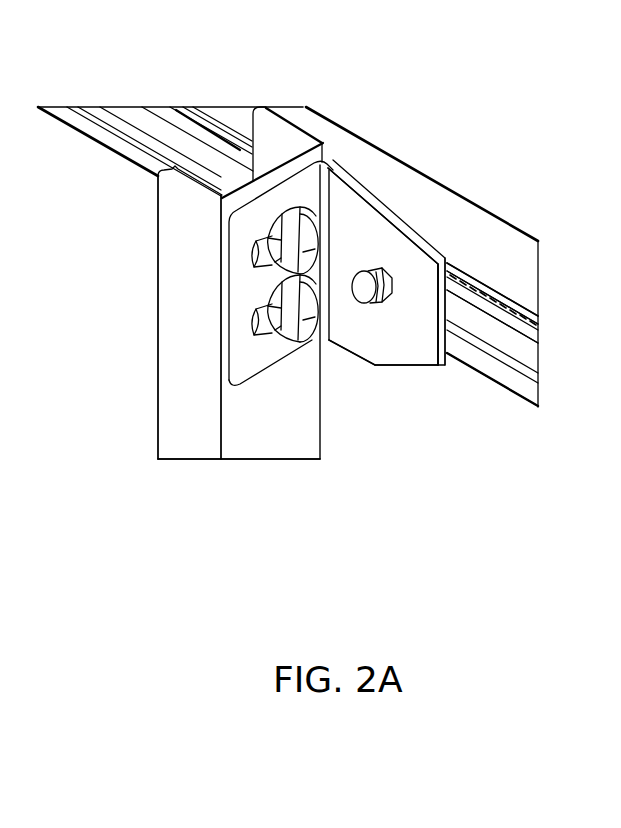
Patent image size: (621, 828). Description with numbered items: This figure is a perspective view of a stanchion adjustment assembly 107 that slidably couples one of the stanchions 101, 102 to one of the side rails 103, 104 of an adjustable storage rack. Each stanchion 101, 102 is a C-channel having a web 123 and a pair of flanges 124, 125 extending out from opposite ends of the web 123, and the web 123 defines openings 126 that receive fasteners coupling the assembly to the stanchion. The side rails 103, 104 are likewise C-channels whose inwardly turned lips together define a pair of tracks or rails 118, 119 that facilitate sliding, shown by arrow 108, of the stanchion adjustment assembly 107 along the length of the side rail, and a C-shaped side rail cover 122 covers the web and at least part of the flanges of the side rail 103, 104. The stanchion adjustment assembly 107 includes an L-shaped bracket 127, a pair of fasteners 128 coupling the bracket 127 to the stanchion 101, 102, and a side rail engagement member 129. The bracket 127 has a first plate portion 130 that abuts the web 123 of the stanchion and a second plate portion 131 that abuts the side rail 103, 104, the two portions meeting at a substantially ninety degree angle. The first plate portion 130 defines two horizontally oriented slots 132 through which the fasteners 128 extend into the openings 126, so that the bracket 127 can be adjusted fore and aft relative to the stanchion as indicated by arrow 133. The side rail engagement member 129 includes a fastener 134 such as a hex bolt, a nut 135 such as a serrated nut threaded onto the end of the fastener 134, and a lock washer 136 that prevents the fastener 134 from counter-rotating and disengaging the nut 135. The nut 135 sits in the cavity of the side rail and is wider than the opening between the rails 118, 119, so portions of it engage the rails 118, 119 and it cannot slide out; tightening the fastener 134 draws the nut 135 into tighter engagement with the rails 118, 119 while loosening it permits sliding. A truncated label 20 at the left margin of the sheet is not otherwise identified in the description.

The mounting system 20 is at (9, 269).
The stanchion 101 is at (187, 438).
The stanchion 102 is at (187, 438).
The side rail 103 is at (507, 238).
The side rail 104 is at (507, 238).
The stanchion adjustment assembly 107 is at (360, 413).
The arrow 108 is at (485, 398).
The track or rail 118 is at (510, 320).
The track or rail 119 is at (520, 367).
The side rail cover 122 is at (448, 212).
The web 123 is at (258, 450).
The flange 124 is at (180, 256).
The flange 125 is at (275, 138).
The openings 126 is at (253, 247).
The bracket 127 is at (365, 210).
The fasteners 128 is at (283, 300).
The side rail engagement member 129 is at (387, 257).
The first plate portion 130 is at (242, 382).
The second plate portion 131 is at (413, 325).
The slots 132 is at (254, 263).
The arrow 133 is at (312, 365).
The fastener 134 is at (363, 296).
The nut 135 is at (0, 297).
The lock washer 136 is at (383, 300).